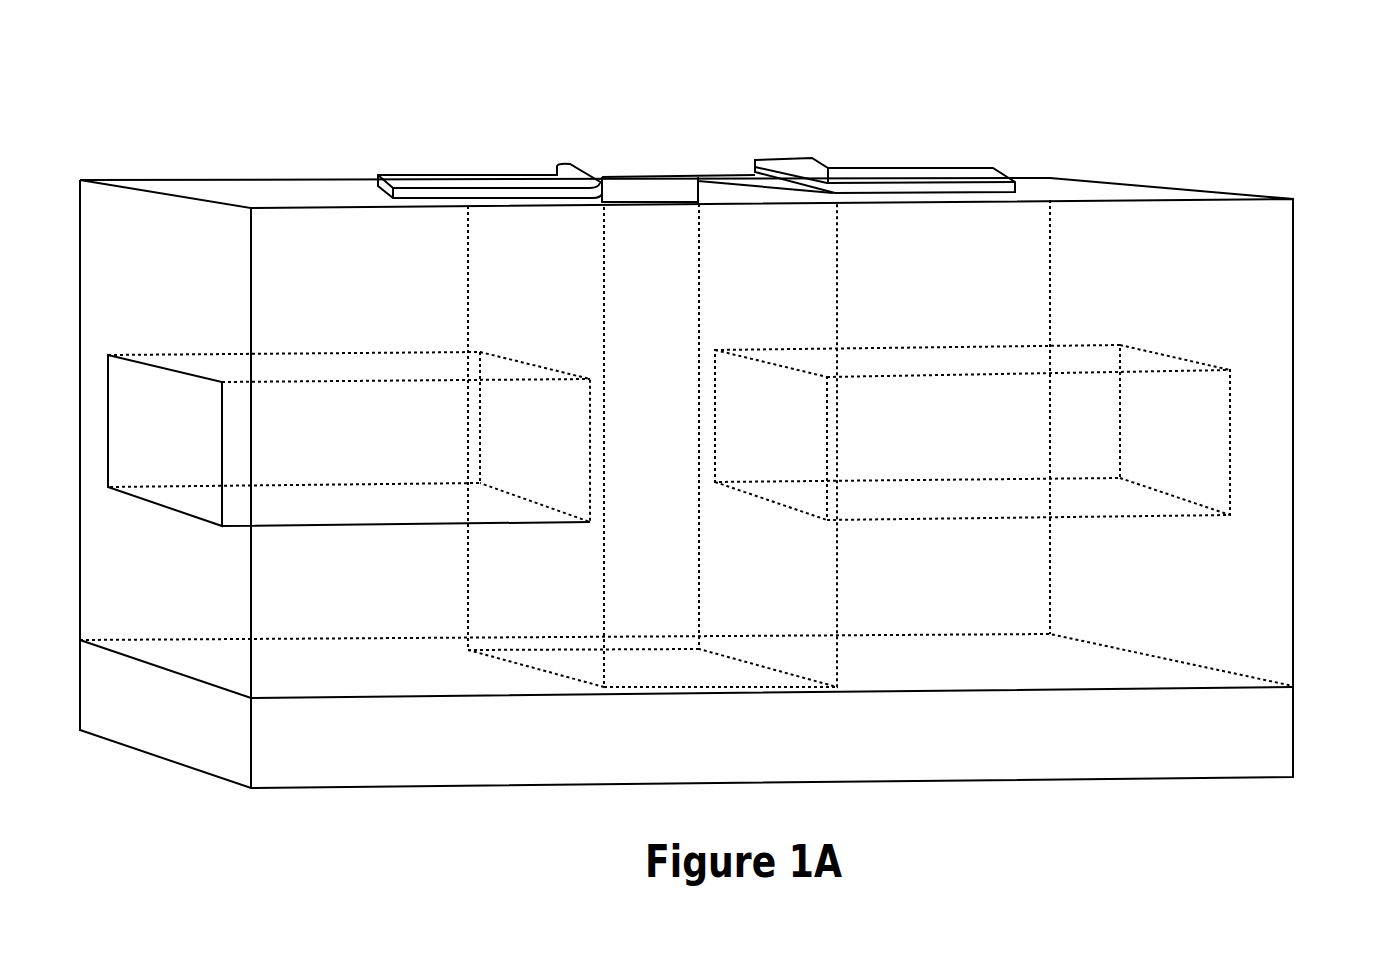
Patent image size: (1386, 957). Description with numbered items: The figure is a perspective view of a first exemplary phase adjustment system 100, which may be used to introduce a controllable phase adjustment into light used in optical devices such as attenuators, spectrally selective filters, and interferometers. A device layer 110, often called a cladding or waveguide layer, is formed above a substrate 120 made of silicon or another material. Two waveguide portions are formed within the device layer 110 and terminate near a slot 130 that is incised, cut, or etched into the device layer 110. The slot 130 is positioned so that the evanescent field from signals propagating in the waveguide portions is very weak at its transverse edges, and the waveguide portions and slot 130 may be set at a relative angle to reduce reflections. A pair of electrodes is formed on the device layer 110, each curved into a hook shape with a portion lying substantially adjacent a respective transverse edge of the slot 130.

The phase adjustment system 100 is at (910, 64).
The device layer 110 is at (120, 250).
The substrate 120 is at (1237, 751).
The slot 130 is at (648, 176).